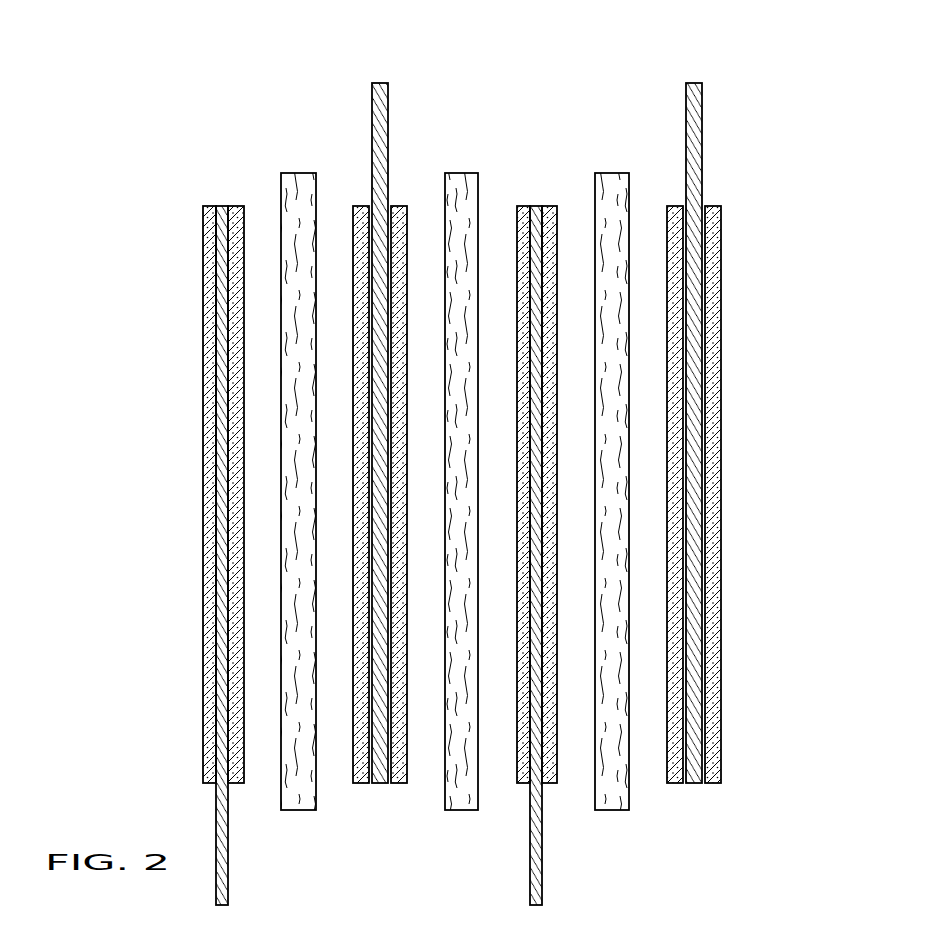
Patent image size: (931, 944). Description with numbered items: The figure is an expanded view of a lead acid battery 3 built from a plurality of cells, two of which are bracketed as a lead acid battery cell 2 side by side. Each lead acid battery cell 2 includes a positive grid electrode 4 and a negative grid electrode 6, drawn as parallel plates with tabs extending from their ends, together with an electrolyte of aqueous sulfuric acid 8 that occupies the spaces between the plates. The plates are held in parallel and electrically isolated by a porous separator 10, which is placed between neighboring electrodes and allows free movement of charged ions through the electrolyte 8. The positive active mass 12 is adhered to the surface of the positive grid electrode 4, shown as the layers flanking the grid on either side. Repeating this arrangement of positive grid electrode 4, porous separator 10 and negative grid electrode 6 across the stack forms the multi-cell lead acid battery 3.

The lead acid battery cell 2 is at (208, 88).
The lead acid battery 3 is at (768, 543).
The positive grid electrode 4 is at (228, 878).
The negative grid electrode 6 is at (372, 783).
The electrolyte of aqueous sulfuric acid 8 is at (248, 518).
The porous separator 10 is at (298, 810).
The positive active mass 12 is at (203, 237).